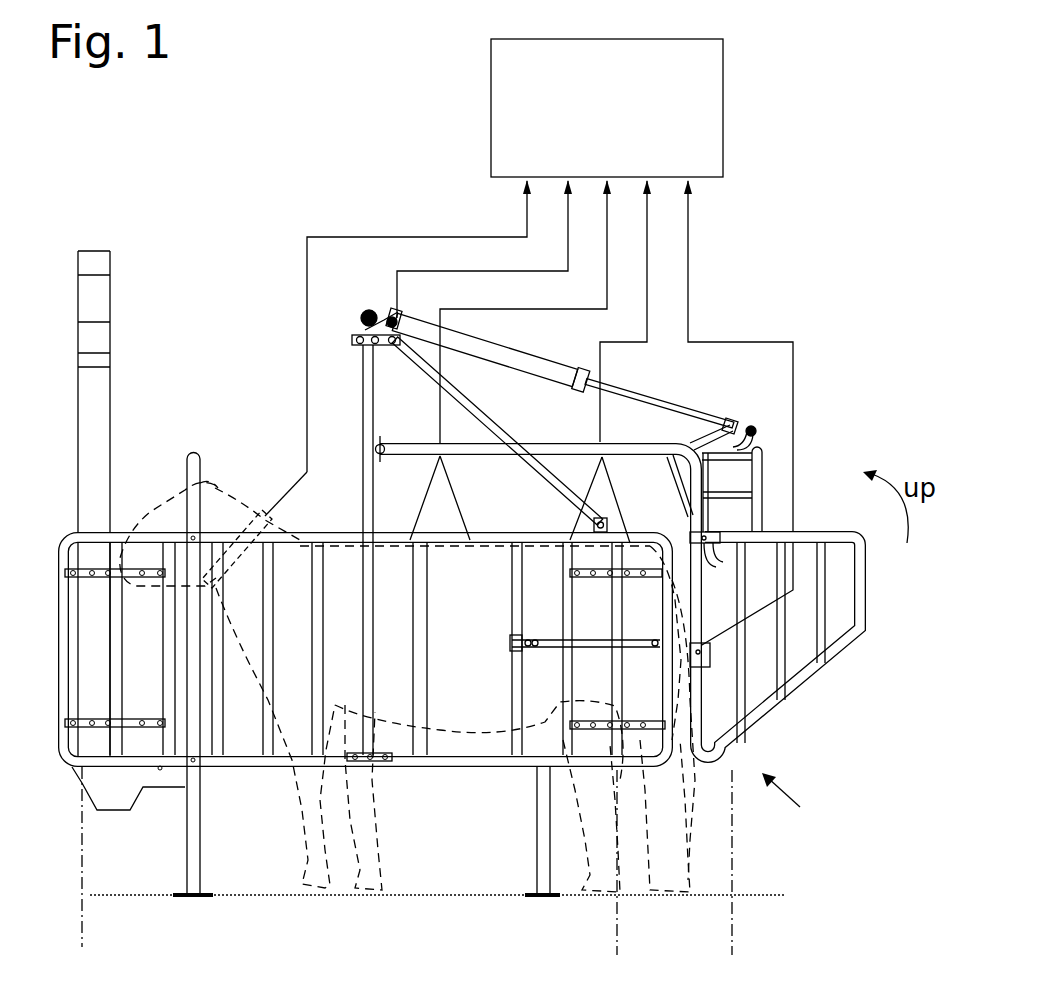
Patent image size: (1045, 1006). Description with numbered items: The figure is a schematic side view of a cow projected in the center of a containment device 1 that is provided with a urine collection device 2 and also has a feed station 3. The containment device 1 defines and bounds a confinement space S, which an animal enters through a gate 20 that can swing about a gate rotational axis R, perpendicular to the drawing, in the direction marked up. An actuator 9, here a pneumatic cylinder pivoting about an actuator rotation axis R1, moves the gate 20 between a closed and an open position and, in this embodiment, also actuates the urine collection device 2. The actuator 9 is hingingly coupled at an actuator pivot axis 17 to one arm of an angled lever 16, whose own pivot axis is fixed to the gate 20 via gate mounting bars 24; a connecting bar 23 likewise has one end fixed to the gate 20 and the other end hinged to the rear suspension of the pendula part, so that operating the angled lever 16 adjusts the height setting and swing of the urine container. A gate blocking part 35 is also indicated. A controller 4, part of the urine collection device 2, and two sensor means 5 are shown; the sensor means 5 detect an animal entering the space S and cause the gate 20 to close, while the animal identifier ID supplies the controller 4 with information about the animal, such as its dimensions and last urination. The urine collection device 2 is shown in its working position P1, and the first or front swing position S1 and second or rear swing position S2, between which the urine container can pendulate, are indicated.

The containment device 1 is at (45, 732).
The urine collection device 2 is at (388, 188).
The feed station 3 is at (64, 397).
The controller 4 is at (682, 100).
The sensor means 5 is at (458, 462).
The actuator 9 is at (512, 365).
The angled lever 16 is at (700, 432).
The actuator pivot axis 17 is at (748, 427).
The gate 20 is at (846, 540).
The connecting bar 23 is at (737, 487).
The gate mounting bars 24 is at (768, 437).
The gate blocking part 35 is at (548, 456).
The gate rotational axis R is at (385, 441).
The actuator rotation axis R1 is at (358, 326).
The animal identifier ID is at (255, 525).
The confinement space S is at (137, 870).
The first or front swing position S1 is at (619, 883).
The second or rear swing position S2 is at (734, 883).
The working position P1 is at (813, 805).